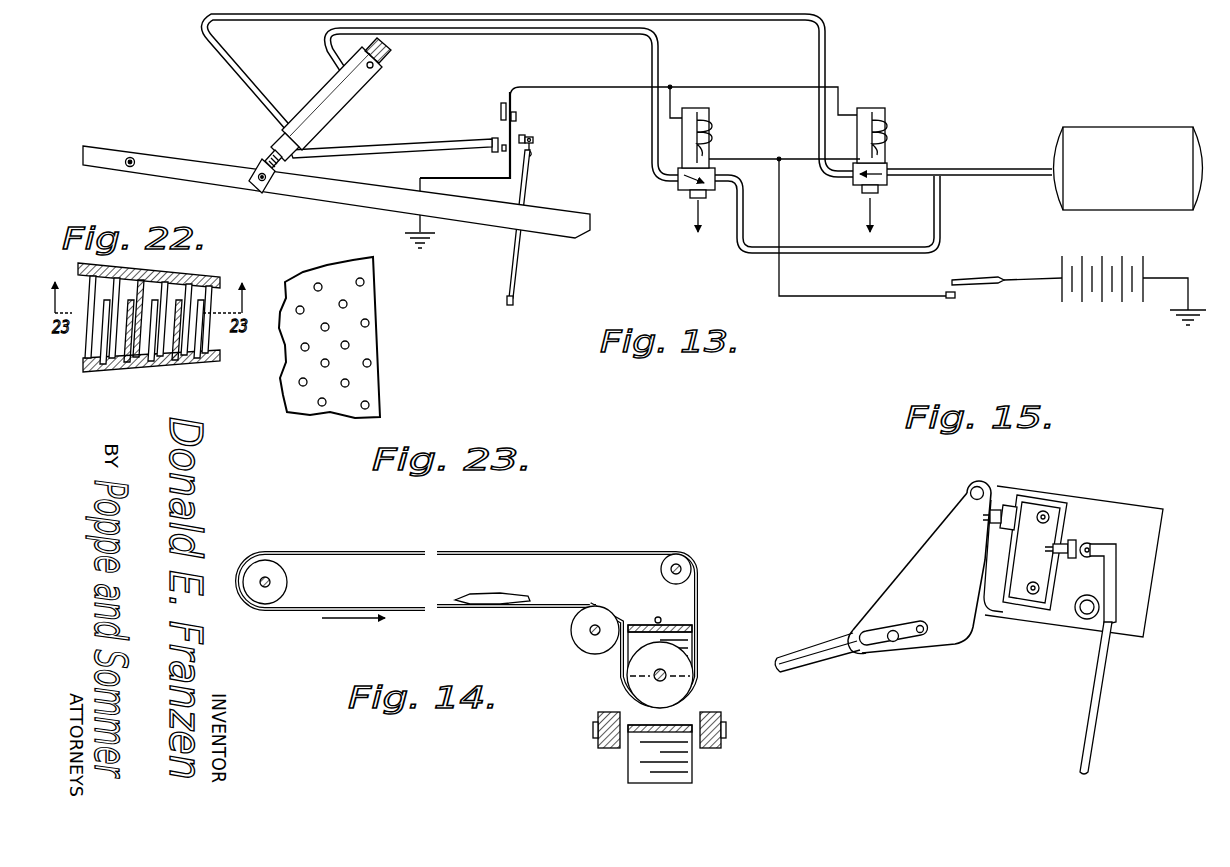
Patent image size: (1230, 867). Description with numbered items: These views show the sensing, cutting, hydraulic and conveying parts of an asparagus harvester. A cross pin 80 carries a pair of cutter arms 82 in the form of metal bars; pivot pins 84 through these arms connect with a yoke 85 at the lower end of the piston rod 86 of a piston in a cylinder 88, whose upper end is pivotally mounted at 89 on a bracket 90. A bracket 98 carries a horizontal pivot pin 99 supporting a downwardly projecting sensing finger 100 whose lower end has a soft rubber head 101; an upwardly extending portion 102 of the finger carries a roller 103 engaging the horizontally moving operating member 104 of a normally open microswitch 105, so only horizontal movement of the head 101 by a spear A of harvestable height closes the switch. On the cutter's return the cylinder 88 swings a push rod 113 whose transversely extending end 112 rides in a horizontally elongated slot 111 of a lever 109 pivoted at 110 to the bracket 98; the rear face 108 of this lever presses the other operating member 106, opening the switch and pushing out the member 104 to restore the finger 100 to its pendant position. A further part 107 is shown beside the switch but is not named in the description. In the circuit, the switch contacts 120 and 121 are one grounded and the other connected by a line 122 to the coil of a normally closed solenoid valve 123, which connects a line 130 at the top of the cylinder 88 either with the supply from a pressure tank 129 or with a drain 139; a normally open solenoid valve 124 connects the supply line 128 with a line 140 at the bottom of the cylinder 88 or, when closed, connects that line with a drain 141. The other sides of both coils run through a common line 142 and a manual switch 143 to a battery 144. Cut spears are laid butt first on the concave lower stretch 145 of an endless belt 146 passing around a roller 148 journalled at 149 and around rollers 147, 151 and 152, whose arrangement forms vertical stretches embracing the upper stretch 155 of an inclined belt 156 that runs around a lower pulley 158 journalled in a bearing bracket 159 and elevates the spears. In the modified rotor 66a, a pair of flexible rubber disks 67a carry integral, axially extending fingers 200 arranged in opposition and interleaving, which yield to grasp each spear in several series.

In FIG. 13, the line 140 is at (229, 79).
In FIG. 13, the line 130 is at (607, 32).
In FIG. 13, the supply line 128 is at (931, 198).
In FIG. 13, the drain 139 is at (687, 197).
In FIG. 13, the drain 141 is at (863, 197).
In FIG. 13, the supply tank 129 is at (1107, 131).
In FIG. 13, the line 122 is at (777, 73).
In FIG. 13, the normally closed solenoid valve 123 is at (712, 133).
In FIG. 13, the normally open solenoid valve 124 is at (887, 137).
In FIG. 13, the common line 142 is at (877, 297).
In FIG. 13, the manual switch 143 is at (970, 277).
In FIG. 13, the battery 144 is at (1120, 305).
In FIG. 13, the contact 120 is at (513, 92).
In FIG. 13, the contact 121 is at (502, 104).
In FIG. 13, the microswitch 105 is at (505, 131).
In FIG. 15, the microswitch 105 is at (1050, 490).
In FIG. 13, the operating member 104 is at (521, 133).
In FIG. 13, the roller 103 is at (531, 135).
In FIG. 15, the roller 103 is at (1094, 541).
In FIG. 13, the operating member 106 is at (503, 152).
In FIG. 15, the operating member 106 is at (1000, 510).
In FIG. 13, the upwardly extending portion 102 is at (535, 149).
In FIG. 15, the upwardly extending portion 102 is at (1104, 583).
In FIG. 13, the sensing finger 100 is at (519, 262).
In FIG. 15, the sensing finger 100 is at (1090, 738).
In FIG. 13, the head 101 is at (515, 302).
In FIG. 13, the push rod 113 is at (410, 146).
In FIG. 15, the push rod 113 is at (820, 666).
In FIG. 13, the cutter arms 82 is at (203, 146).
In FIG. 13, the cross pin 80 is at (128, 167).
In FIG. 13, the cylinder 88 is at (333, 108).
In FIG. 13, the bracket 90 is at (392, 53).
In FIG. 13, the pivotal mounting 89 is at (374, 69).
In FIG. 13, the piston rod 86 is at (267, 160).
In FIG. 13, the pivot pins 84 is at (258, 184).
In FIG. 13, the yoke 85 is at (270, 182).
In FIG. 22, the rotor 66a is at (165, 314).
In FIG. 23, the rotor 66a is at (362, 337).
In FIG. 22, the flexible rubber disks 67a is at (217, 274).
In FIG. 23, the flexible rubber disks 67a is at (376, 342).
In FIG. 22, the axially extending fingers 200 is at (200, 298).
In FIG. 23, the axially extending fingers 200 is at (368, 404).
In FIG. 14, the endless belt 146 is at (573, 550).
In FIG. 14, the lower stretch 145 is at (415, 608).
In FIG. 14, the roller 148 is at (288, 586).
In FIG. 14, the journal 149 is at (270, 588).
In FIG. 14, the asparagus spear A is at (493, 595).
In FIG. 14, the roller 152 is at (697, 559).
In FIG. 14, the roller 147 is at (580, 641).
In FIG. 14, the inclined belt 156 is at (695, 637).
In FIG. 14, the upper stretch 155 is at (688, 624).
In FIG. 14, the roller 151 is at (684, 693).
In FIG. 14, the pulley 158 is at (628, 710).
In FIG. 14, the bearing bracket 159 is at (719, 747).
In FIG. 15, the bracket 98 is at (1135, 509).
In FIG. 15, the rear face 108 is at (979, 610).
In FIG. 15, the lever 109 is at (912, 565).
In FIG. 15, the pivot 110 is at (969, 486).
In FIG. 15, the transversely extending end 112 is at (892, 630).
In FIG. 15, the slot 111 is at (922, 636).
In FIG. 15, the contact 107 is at (1064, 543).
In FIG. 15, the pivot pin 99 is at (1094, 609).